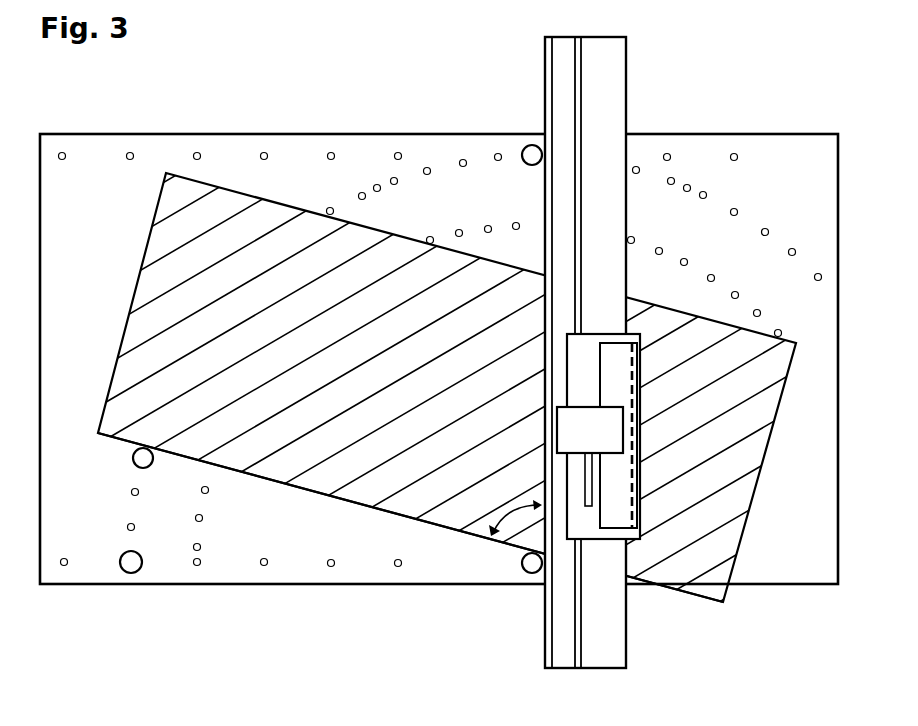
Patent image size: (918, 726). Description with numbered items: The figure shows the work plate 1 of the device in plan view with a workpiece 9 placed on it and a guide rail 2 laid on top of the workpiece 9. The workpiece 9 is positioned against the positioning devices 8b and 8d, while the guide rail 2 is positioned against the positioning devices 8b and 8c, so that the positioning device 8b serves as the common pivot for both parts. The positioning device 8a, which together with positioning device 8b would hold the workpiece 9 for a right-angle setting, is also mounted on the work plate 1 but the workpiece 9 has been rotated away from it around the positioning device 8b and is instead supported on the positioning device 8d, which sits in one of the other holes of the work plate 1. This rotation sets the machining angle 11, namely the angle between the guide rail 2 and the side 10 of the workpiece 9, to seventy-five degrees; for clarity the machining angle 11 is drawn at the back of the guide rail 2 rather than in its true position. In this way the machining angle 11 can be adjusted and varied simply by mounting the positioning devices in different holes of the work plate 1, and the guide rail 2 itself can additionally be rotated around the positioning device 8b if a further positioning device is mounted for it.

The work plate 1 is at (85, 232).
The guide rail 2 is at (613, 105).
The positioning device 8a is at (127, 573).
The positioning device 8b is at (527, 575).
The positioning device 8c is at (524, 146).
The positioning device 8d is at (135, 468).
The workpiece 9 is at (128, 352).
The side of the workpiece 10 is at (356, 503).
The machining angle 11 is at (510, 530).